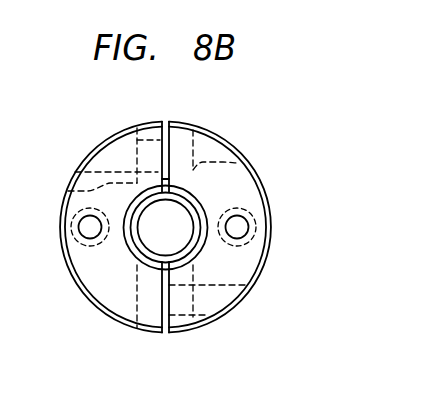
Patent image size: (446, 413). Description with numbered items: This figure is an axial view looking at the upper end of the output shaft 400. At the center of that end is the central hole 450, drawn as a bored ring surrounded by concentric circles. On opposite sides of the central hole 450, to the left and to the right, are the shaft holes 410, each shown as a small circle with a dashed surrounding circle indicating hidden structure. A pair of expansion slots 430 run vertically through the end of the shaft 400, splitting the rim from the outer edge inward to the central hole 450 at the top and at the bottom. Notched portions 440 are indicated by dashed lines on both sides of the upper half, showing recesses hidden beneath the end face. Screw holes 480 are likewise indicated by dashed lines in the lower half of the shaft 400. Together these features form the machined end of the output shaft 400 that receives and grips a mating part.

The output shaft 400 is at (245, 273).
The shaft hole 410 is at (240, 176).
The expansion slot 430 is at (165, 121).
The notched portion 440 is at (68, 191).
The central hole 450 is at (147, 237).
The screw hole 480 is at (202, 327).